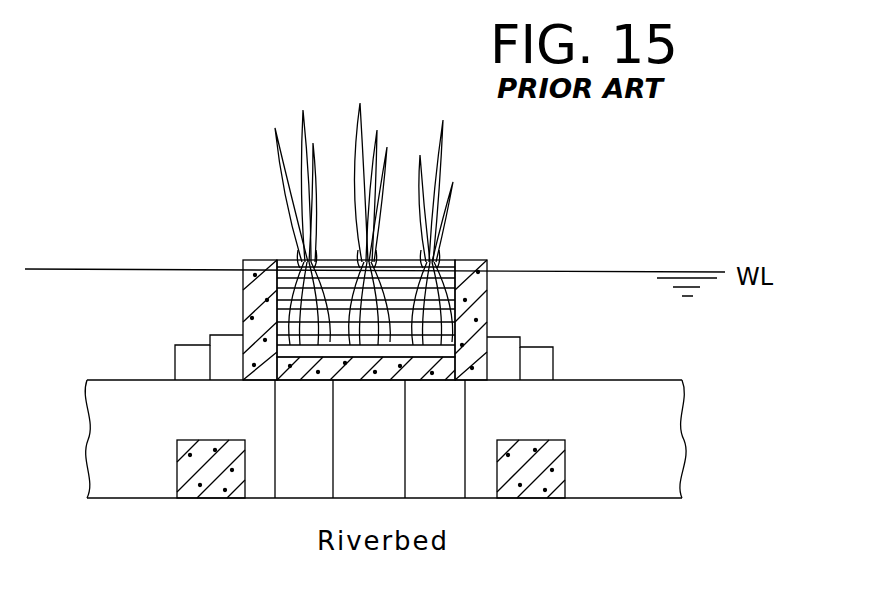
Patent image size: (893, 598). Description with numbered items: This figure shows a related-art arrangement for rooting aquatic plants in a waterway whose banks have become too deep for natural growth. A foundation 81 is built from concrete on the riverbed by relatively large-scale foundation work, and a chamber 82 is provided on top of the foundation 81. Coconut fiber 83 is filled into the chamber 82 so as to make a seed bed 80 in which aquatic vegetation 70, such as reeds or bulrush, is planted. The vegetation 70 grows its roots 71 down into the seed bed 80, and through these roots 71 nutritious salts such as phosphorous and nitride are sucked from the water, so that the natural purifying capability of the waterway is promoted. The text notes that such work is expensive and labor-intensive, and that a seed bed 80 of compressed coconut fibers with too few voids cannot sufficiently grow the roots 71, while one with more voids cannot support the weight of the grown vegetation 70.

The vegetation 70 is at (453, 202).
The roots 71 is at (480, 260).
The seed bed 80 is at (341, 254).
The foundation 81 is at (600, 381).
The chamber 82 is at (250, 270).
The coconut fiber 83 is at (290, 260).